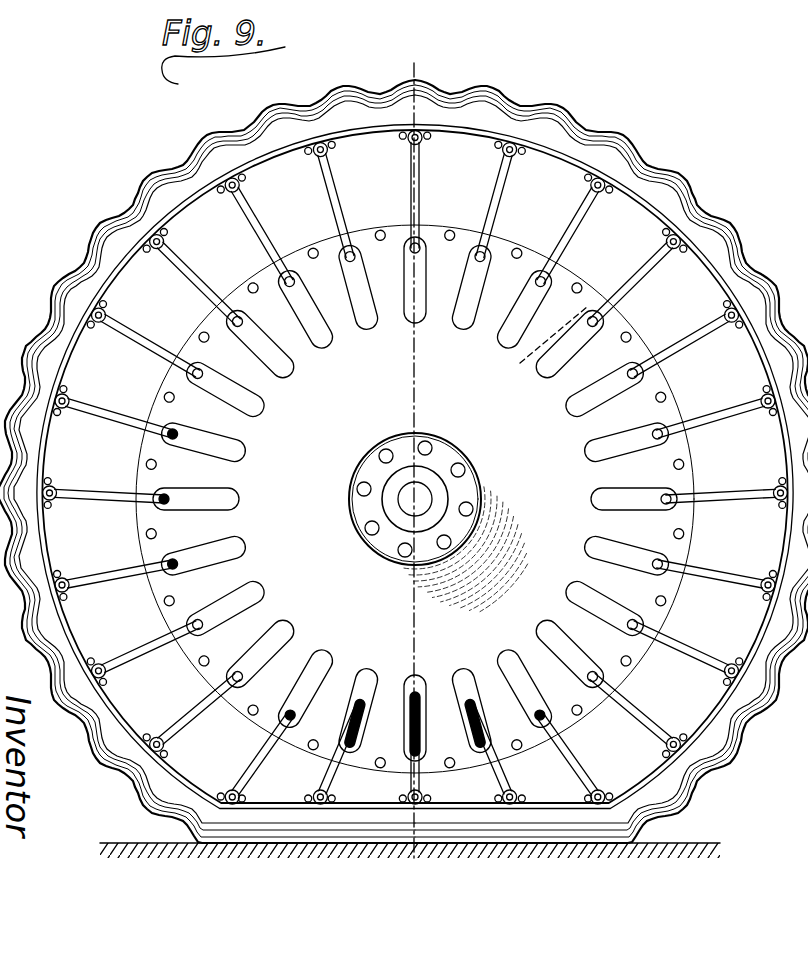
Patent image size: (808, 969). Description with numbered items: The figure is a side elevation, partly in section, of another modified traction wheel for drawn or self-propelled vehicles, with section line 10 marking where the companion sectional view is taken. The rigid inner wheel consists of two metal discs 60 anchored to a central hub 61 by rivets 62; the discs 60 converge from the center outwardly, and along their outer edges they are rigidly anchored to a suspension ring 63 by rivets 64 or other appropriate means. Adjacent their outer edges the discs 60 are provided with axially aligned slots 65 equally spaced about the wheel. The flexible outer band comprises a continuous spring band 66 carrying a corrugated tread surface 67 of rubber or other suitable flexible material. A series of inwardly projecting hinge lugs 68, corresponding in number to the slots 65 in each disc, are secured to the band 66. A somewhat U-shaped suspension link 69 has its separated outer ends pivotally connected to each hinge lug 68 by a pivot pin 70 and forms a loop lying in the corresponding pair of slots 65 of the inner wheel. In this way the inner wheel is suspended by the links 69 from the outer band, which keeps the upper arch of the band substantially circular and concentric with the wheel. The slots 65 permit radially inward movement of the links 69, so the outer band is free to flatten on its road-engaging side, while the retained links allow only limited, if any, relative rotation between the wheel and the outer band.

The section line 10 is at (445, 57).
The metal discs 60 is at (137, 480).
The central hub 61 is at (432, 468).
The rivets 62 is at (422, 449).
The suspension ring 63 is at (535, 345).
The rivets 64 is at (523, 257).
The slots 65 is at (322, 322).
The spring band 66 is at (563, 162).
The corrugated tread surface 67 is at (580, 142).
The hinge lugs 68 is at (675, 250).
The suspension link 69 is at (633, 272).
The pivot pin 70 is at (408, 140).